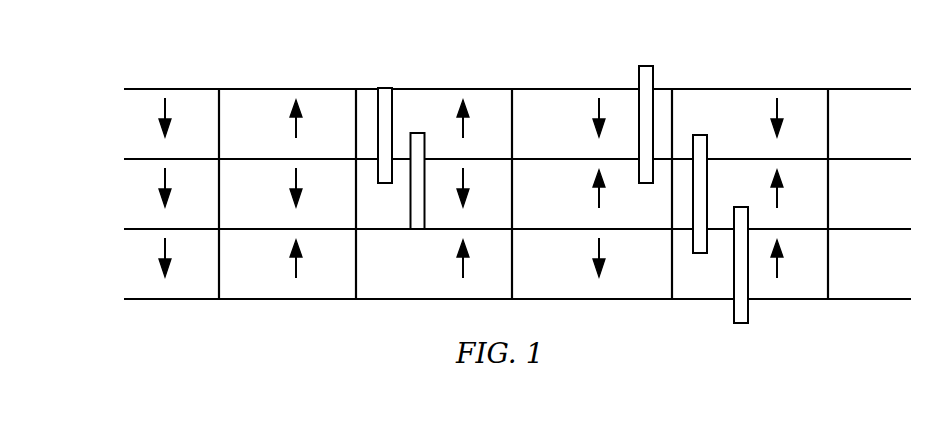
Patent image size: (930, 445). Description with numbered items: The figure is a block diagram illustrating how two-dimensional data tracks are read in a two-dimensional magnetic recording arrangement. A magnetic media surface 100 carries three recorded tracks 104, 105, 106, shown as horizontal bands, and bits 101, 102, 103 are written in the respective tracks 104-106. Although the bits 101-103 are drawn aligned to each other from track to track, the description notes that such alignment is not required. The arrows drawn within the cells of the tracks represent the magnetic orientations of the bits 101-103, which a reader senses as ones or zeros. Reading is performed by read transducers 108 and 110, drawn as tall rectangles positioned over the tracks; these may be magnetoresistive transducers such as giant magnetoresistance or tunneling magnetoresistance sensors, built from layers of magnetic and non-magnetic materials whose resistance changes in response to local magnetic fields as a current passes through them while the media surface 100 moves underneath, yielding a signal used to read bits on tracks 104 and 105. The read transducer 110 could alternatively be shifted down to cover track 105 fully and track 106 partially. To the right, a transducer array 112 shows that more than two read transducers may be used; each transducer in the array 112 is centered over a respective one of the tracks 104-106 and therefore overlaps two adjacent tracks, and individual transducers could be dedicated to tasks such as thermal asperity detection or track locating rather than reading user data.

The magnetic media surface 100 is at (694, 364).
The bit 101 is at (203, 151).
The bit 102 is at (203, 221).
The bit 103 is at (203, 290).
The track 104 is at (115, 90).
The track 105 is at (115, 160).
The track 106 is at (115, 230).
The read transducer 108 is at (384, 88).
The read transducer 110 is at (416, 133).
The transducer array 112 is at (785, 57).